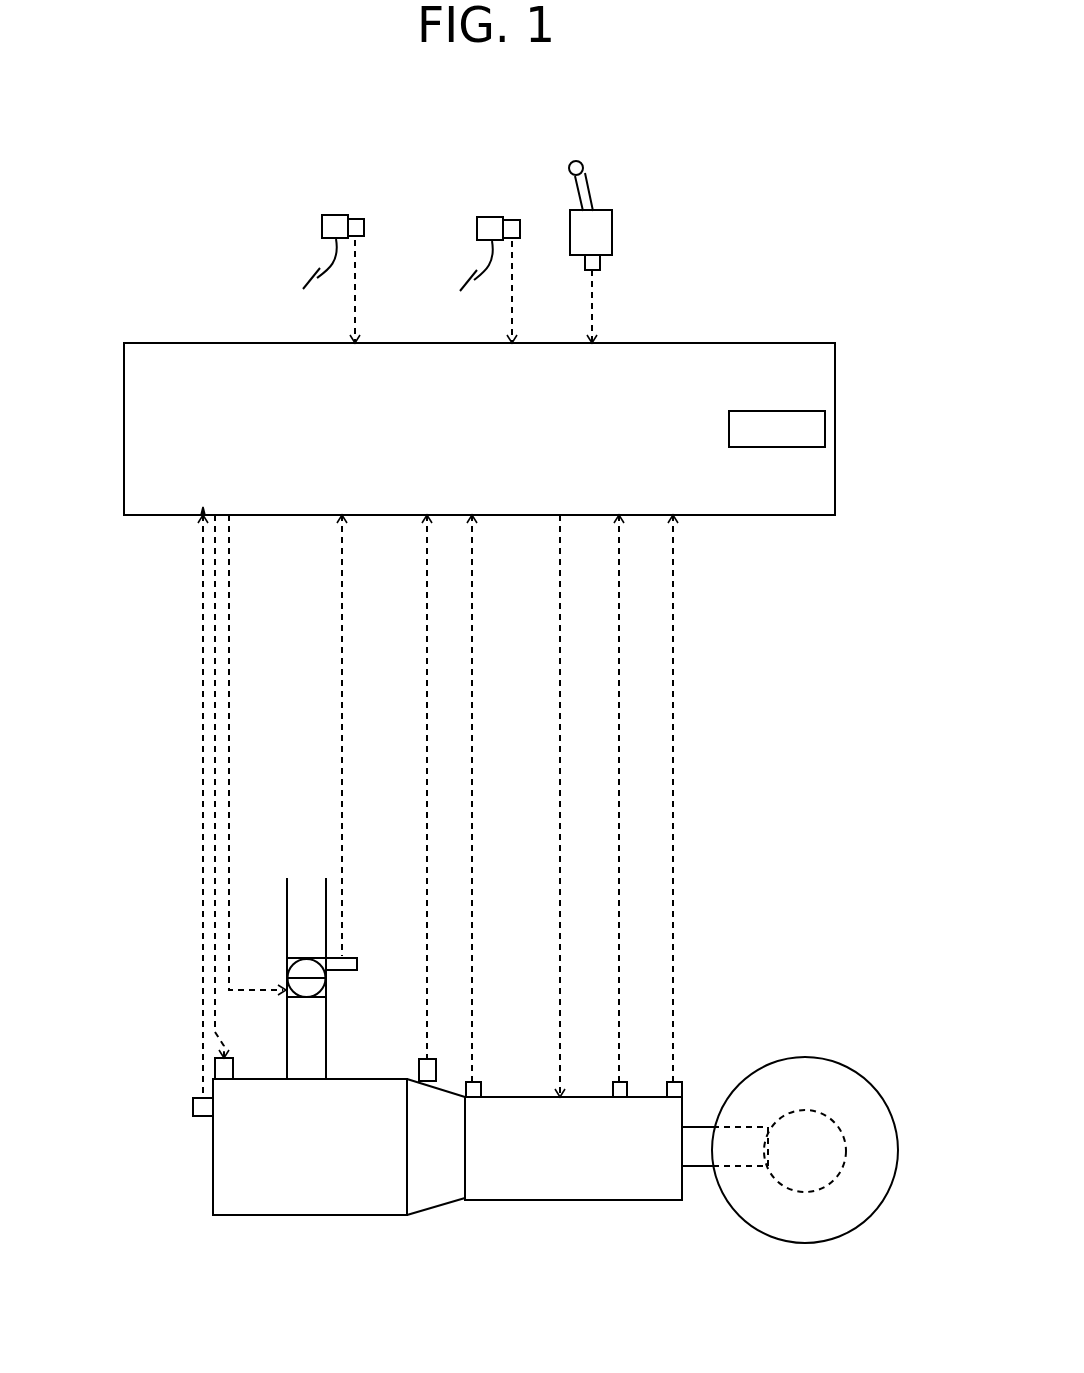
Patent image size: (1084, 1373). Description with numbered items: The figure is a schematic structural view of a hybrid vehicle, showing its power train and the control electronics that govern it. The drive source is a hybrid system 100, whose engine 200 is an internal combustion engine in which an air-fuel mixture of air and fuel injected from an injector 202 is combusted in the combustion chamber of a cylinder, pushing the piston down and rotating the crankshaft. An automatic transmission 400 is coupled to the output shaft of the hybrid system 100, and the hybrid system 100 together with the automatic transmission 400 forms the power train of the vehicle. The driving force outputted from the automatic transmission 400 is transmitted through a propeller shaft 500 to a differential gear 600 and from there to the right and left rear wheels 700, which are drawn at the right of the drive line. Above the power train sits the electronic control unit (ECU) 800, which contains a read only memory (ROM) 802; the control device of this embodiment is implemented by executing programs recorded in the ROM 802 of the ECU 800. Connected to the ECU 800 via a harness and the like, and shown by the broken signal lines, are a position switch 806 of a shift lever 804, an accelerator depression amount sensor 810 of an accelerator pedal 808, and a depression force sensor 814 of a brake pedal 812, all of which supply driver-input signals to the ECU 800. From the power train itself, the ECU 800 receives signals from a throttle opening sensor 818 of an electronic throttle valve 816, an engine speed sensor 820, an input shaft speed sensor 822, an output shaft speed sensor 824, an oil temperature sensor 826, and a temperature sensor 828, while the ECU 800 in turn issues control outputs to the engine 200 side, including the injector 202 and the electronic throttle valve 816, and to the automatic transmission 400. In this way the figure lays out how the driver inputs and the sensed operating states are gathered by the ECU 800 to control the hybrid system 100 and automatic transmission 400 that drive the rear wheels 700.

The hybrid system 100 is at (388, 1253).
The engine 200 is at (277, 1218).
The injector 202 is at (238, 1068).
The automatic transmission 400 is at (545, 1203).
The propeller shaft 500 is at (703, 1168).
The differential gear 600 is at (812, 1112).
The rear wheels 700 is at (805, 1243).
The electronic control unit (ECU) 800 is at (182, 343).
The read only memory (ROM) 802 is at (782, 411).
The shift lever 804 is at (597, 192).
The position switch 806 is at (602, 263).
The accelerator pedal 808 is at (491, 248).
The accelerator depression amount sensor 810 is at (512, 220).
The brake pedal 812 is at (335, 238).
The depression force sensor 814 is at (355, 218).
The electronic throttle valve 816 is at (287, 962).
The throttle opening sensor 818 is at (338, 972).
The engine speed sensor 820 is at (193, 1107).
The input shaft speed sensor 822 is at (482, 1092).
The output shaft speed sensor 824 is at (684, 1090).
The oil temperature sensor 826 is at (612, 1088).
The temperature sensor 828 is at (415, 1068).